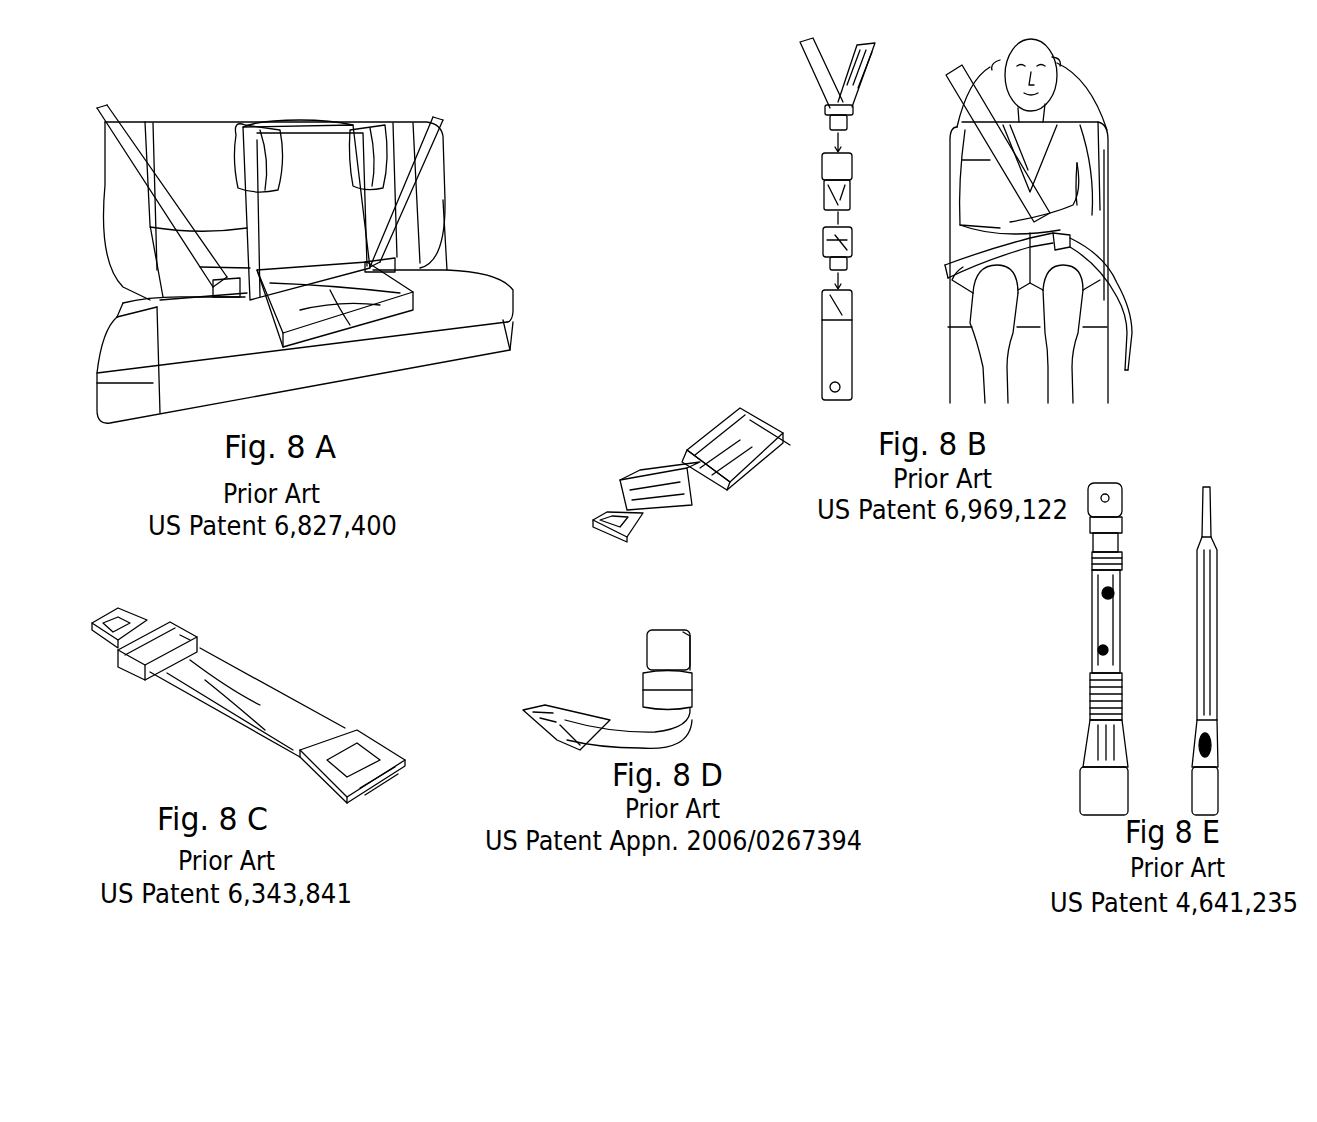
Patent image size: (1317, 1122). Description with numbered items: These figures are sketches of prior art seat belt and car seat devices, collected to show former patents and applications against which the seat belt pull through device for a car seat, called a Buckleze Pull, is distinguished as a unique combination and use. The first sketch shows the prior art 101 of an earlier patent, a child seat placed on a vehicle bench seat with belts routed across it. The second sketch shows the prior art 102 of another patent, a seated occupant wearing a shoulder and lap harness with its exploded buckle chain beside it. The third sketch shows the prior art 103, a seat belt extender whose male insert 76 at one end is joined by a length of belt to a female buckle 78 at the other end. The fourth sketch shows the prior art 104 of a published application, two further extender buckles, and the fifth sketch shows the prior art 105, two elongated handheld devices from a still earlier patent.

In FIG. 8A, the prior art 101 is at (453, 390).
In FIG. 8B, the prior art 102 is at (1172, 270).
In FIG. 8C, the male insert 76 is at (108, 640).
In FIG. 8C, the female buckle 78 is at (378, 738).
In FIG. 8C, the prior art 103 is at (281, 784).
In FIG. 8D, the prior art 104 is at (738, 525).
In FIG. 8E, the prior art 105 is at (1018, 830).